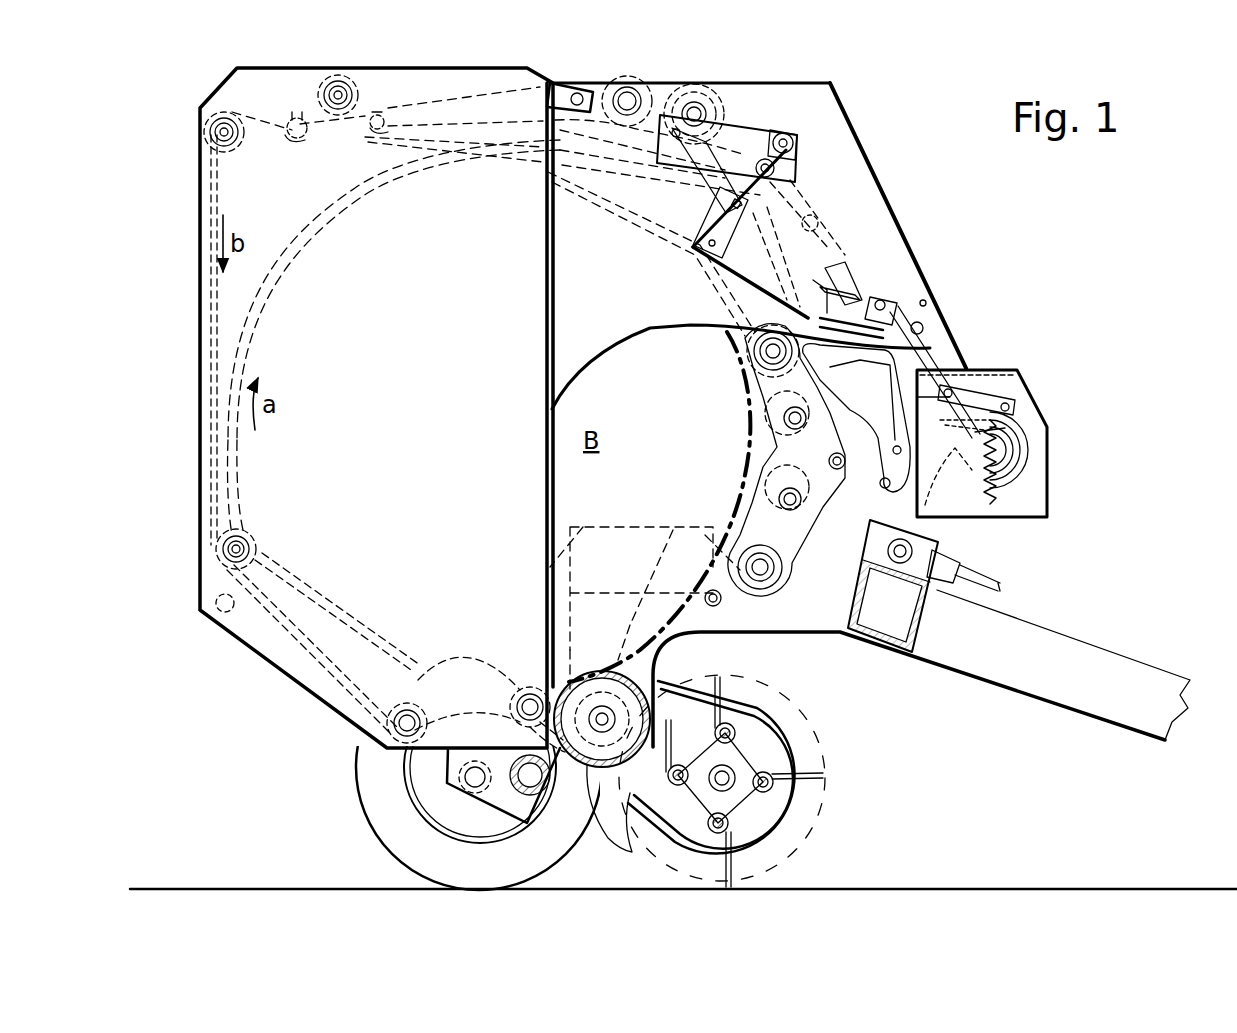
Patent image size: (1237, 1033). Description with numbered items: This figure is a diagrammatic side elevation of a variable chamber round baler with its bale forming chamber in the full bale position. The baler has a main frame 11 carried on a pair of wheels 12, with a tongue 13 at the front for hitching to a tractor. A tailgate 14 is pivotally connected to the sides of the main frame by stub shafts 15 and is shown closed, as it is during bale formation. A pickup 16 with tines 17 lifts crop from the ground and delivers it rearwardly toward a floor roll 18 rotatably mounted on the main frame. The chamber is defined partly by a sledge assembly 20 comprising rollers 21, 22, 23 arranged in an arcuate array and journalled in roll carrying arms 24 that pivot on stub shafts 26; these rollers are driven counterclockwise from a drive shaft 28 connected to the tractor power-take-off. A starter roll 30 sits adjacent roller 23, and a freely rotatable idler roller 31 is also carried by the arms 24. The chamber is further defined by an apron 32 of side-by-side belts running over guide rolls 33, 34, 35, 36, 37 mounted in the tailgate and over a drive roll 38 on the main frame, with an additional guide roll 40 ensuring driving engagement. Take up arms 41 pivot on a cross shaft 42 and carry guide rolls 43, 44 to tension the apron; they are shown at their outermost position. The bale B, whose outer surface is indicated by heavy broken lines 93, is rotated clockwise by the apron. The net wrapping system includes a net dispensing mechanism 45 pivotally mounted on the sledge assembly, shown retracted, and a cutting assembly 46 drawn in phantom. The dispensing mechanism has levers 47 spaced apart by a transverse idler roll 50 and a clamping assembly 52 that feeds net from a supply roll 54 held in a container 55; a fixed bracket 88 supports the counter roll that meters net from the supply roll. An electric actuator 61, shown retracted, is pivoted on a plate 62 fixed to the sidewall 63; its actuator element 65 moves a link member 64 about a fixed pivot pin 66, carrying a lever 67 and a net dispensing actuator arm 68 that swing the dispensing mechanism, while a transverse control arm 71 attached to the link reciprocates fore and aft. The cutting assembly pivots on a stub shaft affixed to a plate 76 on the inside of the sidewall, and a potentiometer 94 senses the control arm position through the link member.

The main frame 11 is at (580, 527).
The wheels 12 is at (370, 815).
The tongue 13 is at (1060, 645).
The tailgate 14 is at (212, 88).
The stub shafts 15 is at (568, 82).
The pickup 16 is at (845, 773).
The tines 17 is at (730, 680).
The floor roll 18 is at (630, 840).
The sledge assembly 20 is at (925, 520).
The roller 21 is at (770, 418).
The roller 22 is at (770, 467).
The roller 23 is at (760, 525).
The roll carrying arms 24 is at (842, 498).
The stub shafts 26 is at (795, 560).
The drive shaft 28 is at (990, 578).
The starter roll 30 is at (713, 608).
The idler roller 31 is at (755, 348).
The apron 32 is at (347, 193).
The guide roll 33 is at (520, 690).
The guide roll 34 is at (392, 705).
The guide roll 35 is at (250, 540).
The guide roll 36 is at (228, 148).
The guide roll 37 is at (338, 80).
The drive roll 38 is at (690, 100).
The guide roll 40 is at (620, 165).
The take up arms 41 is at (453, 95).
The cross shaft 42 is at (627, 86).
The guide roll 43 is at (297, 115).
The guide roll 44 is at (378, 114).
The net dispensing mechanism 45 is at (925, 345).
The cutting assembly 46 is at (860, 268).
The levers 47 is at (910, 365).
The idler roll 50 is at (1005, 443).
The clamping assembly 52 is at (750, 384).
The supply roll 54 is at (1020, 425).
The container 55 is at (1048, 490).
The electric actuator 61 is at (700, 168).
The plate 62 is at (750, 120).
The sidewall 63 is at (893, 165).
The link member 64 is at (785, 257).
The actuator element 65 is at (718, 210).
The pivot pin 66 is at (778, 168).
The lever 67 is at (797, 192).
The net dispensing actuator arm 68 is at (830, 265).
The control arm 71 is at (745, 270).
The plate 76 is at (905, 300).
The fixed bracket 88 is at (950, 478).
The heavy broken lines 93 is at (647, 640).
The potentiometer 94 is at (795, 125).